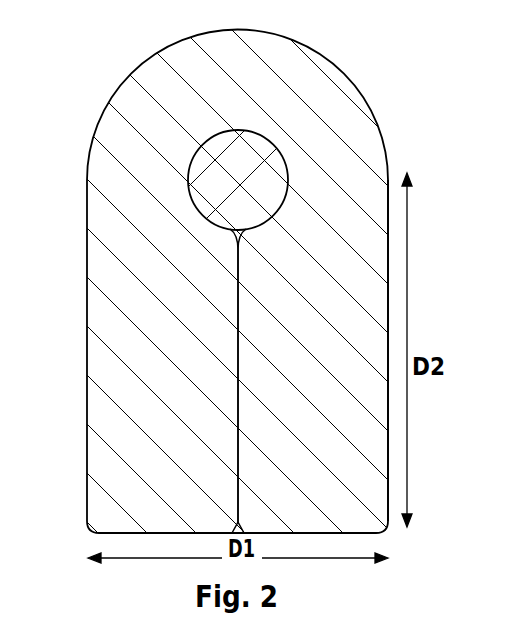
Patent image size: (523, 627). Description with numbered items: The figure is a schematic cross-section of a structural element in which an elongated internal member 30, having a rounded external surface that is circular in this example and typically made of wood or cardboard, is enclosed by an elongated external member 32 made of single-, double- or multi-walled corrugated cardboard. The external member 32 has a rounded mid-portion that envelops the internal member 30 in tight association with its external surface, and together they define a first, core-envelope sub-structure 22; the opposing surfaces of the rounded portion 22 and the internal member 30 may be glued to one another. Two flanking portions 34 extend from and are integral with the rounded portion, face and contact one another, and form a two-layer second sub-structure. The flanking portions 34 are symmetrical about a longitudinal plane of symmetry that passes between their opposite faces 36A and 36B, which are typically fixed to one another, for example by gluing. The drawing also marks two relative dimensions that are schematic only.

The core-envelope sub-structure 22 is at (138, 69).
The internal member 30 is at (265, 162).
The external member 32 is at (388, 303).
The flanking portions 34 is at (120, 313).
The opposite face 36A is at (238, 463).
The opposite face 36B is at (238, 400).